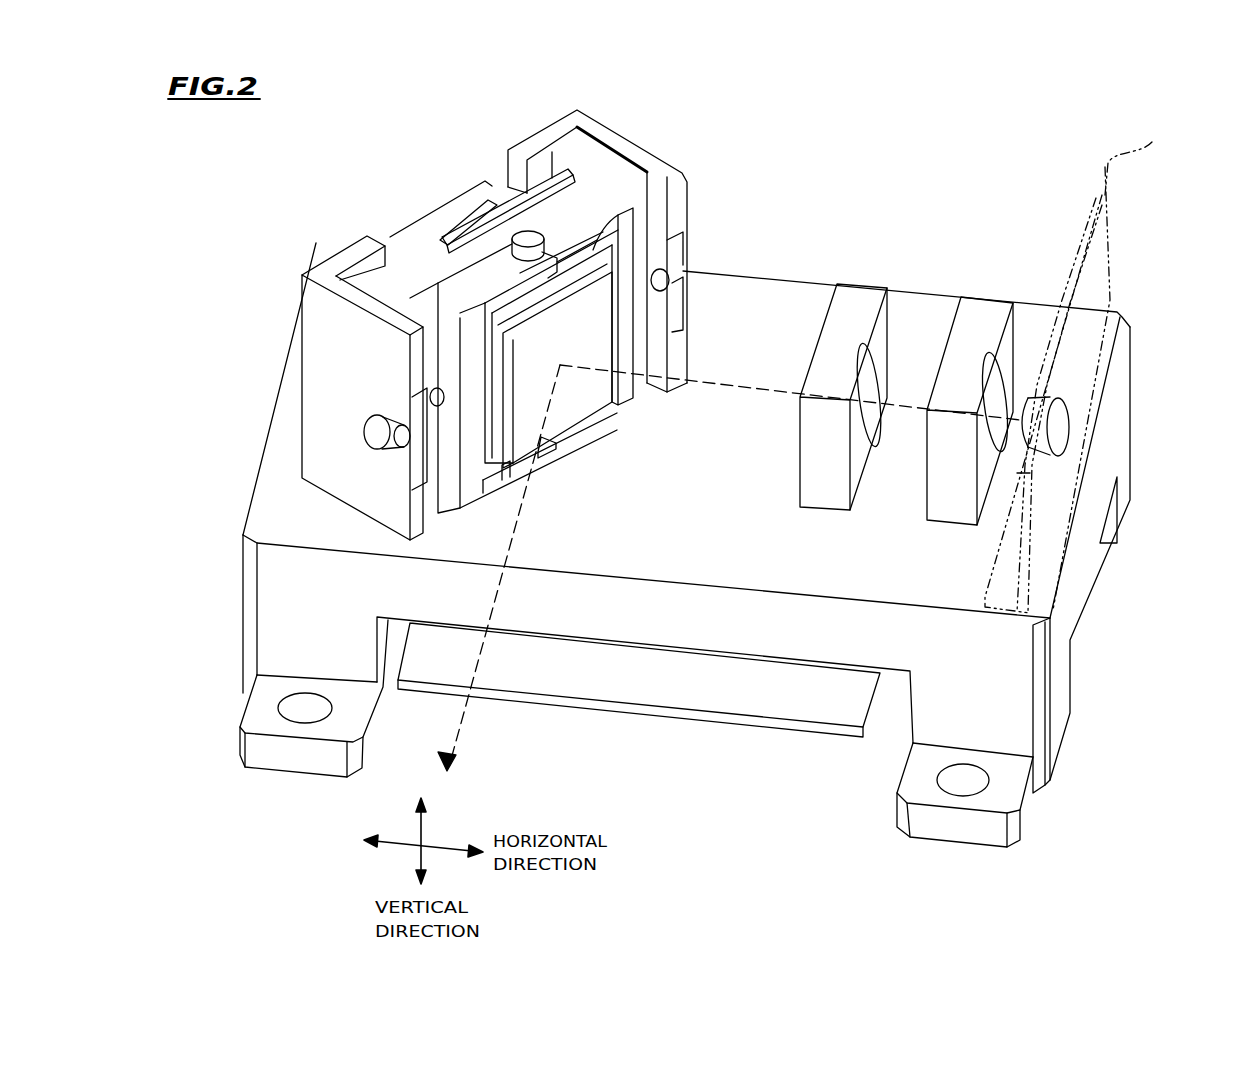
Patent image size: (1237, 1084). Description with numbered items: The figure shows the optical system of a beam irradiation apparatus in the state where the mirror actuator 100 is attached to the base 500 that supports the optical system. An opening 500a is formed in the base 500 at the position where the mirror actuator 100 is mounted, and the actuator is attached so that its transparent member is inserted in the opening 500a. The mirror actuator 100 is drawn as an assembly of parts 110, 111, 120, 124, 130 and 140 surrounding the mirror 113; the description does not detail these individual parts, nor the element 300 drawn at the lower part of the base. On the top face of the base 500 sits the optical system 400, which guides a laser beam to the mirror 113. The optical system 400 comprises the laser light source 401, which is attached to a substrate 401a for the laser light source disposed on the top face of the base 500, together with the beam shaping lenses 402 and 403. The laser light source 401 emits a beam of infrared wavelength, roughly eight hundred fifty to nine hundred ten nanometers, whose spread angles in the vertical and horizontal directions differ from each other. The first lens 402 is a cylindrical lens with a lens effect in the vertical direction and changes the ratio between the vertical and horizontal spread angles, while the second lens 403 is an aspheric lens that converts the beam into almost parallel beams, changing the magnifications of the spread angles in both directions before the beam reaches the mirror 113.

The mirror actuator 100 is at (316, 248).
The holder plate 110 is at (637, 212).
The knob 111 is at (528, 233).
The mirror 113 is at (573, 400).
The base block 120 is at (485, 267).
The end plate 124 is at (363, 407).
The frame 130 is at (613, 137).
The spacer 140 is at (546, 457).
The bar 300 is at (725, 718).
The optical system 400 is at (875, 543).
The laser light source 401 is at (1063, 400).
The substrate for the laser light source 401a is at (1090, 362).
The cylindrical lens 402 is at (1007, 377).
The aspheric lens 403 is at (875, 370).
The base 500 is at (1112, 463).
The opening 500a is at (633, 408).